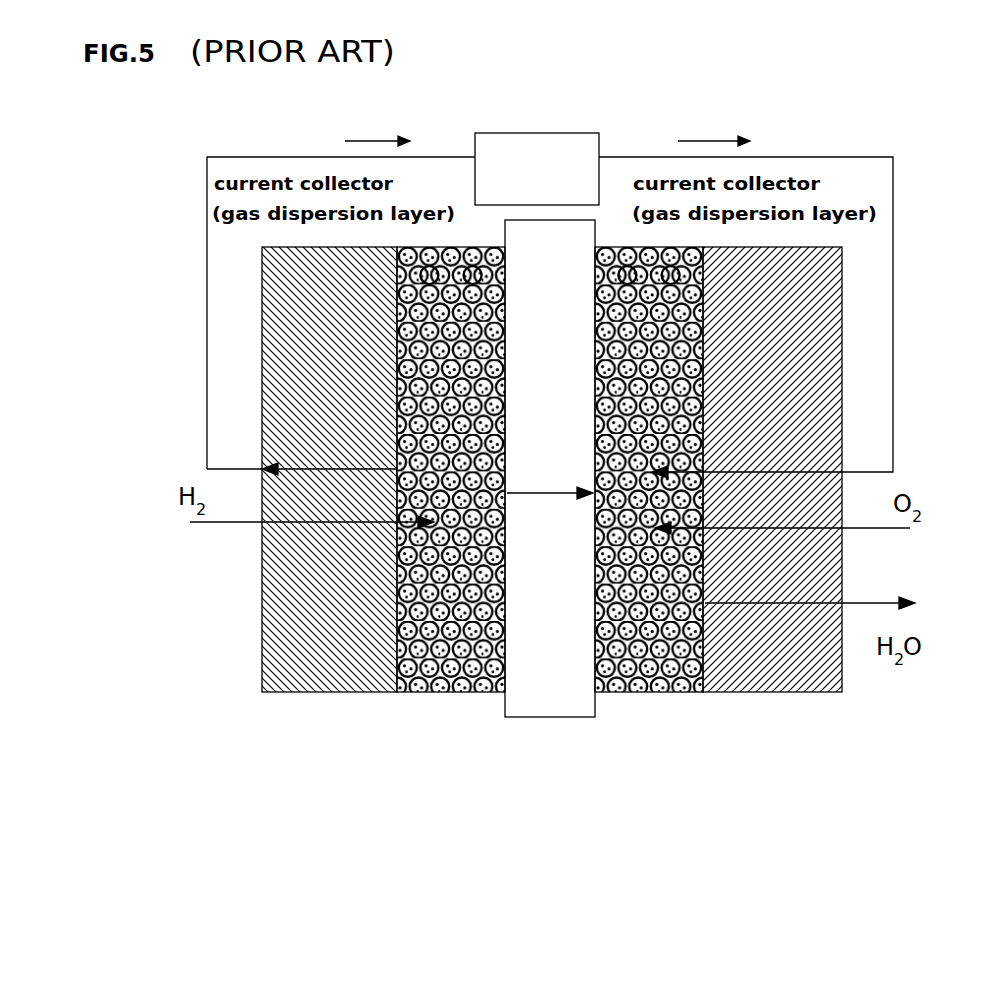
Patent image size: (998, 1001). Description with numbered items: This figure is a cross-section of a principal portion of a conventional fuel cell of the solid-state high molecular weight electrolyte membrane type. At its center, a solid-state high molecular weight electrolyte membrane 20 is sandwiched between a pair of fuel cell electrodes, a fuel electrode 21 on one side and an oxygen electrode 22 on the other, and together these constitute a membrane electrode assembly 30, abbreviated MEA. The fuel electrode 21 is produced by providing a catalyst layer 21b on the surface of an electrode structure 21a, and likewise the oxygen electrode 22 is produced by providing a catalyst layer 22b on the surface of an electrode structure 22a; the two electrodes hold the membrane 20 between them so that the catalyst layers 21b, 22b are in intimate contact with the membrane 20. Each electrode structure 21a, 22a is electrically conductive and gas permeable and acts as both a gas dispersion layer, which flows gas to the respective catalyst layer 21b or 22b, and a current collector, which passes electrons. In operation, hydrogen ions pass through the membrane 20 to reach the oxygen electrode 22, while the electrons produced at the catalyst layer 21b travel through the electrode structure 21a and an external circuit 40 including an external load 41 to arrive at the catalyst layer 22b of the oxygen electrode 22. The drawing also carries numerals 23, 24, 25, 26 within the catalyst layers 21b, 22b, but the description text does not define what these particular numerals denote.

The solid-state high molecular weight electrolyte membrane 20 is at (553, 717).
The fuel electrode 21 is at (372, 565).
The electrode structure 21a is at (297, 692).
The catalyst layer 21b is at (457, 692).
The oxygen electrode 22 is at (789, 563).
The electrode structure 22a is at (820, 662).
The catalyst layer 22b is at (652, 692).
The anode catalyst particles 23 is at (423, 692).
The anode electrolyte binder 24 is at (460, 692).
The cathode catalyst particles 25 is at (620, 692).
The cathode electrolyte binder 26 is at (630, 692).
The membrane electrode assembly 30 is at (636, 447).
The external circuit 40 is at (445, 150).
The external load 41 is at (587, 133).